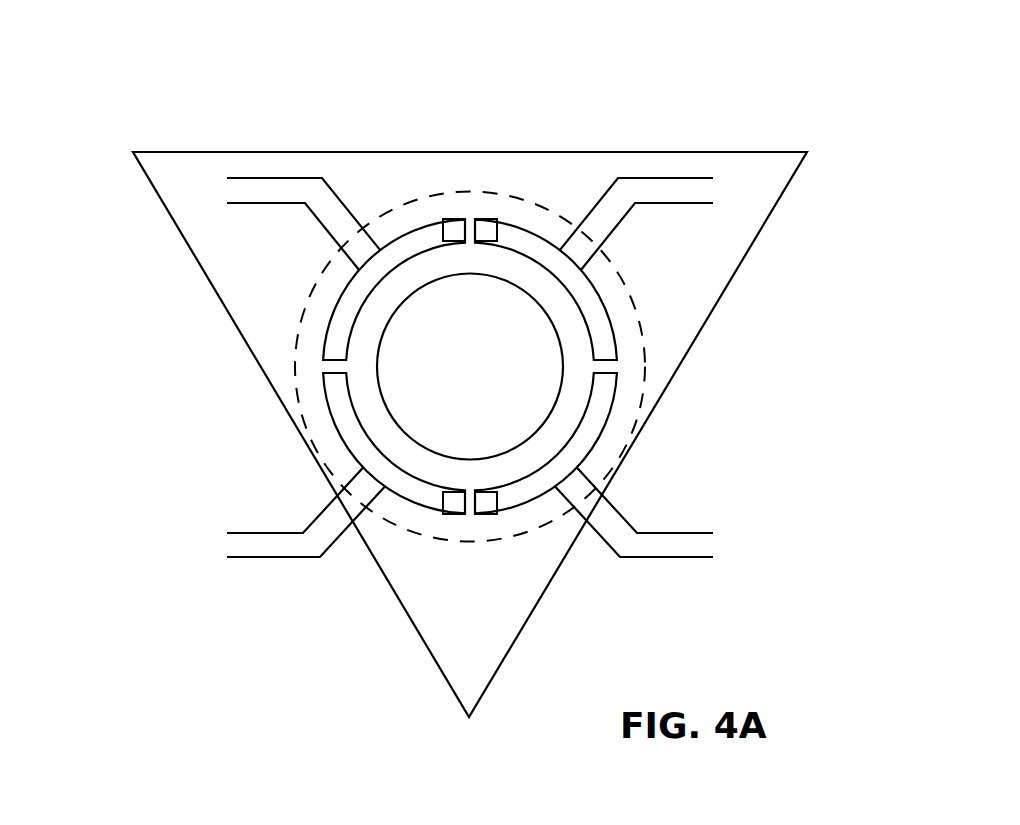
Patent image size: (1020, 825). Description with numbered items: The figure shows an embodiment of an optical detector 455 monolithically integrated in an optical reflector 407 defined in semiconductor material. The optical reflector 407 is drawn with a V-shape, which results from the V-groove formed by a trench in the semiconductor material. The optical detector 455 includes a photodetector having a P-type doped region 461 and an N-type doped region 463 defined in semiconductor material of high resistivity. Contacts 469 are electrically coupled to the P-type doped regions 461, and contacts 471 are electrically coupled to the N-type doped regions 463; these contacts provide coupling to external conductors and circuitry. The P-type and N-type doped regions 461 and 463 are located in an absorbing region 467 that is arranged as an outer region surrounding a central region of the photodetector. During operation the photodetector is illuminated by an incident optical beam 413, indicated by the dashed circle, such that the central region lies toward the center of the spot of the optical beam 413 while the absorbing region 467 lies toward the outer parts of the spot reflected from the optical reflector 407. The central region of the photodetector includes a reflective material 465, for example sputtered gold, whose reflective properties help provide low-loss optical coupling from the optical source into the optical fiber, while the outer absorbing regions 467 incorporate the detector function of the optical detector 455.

The optical detector 455 is at (726, 80).
The optical reflector 407 is at (190, 170).
The optical beam 413 is at (300, 310).
The P-type doped region 461 is at (508, 218).
The N-type doped region 463 is at (400, 228).
The reflective material 465 is at (560, 340).
The absorbing region 467 is at (615, 363).
The contacts 469 is at (665, 178).
The contacts 471 is at (283, 178).